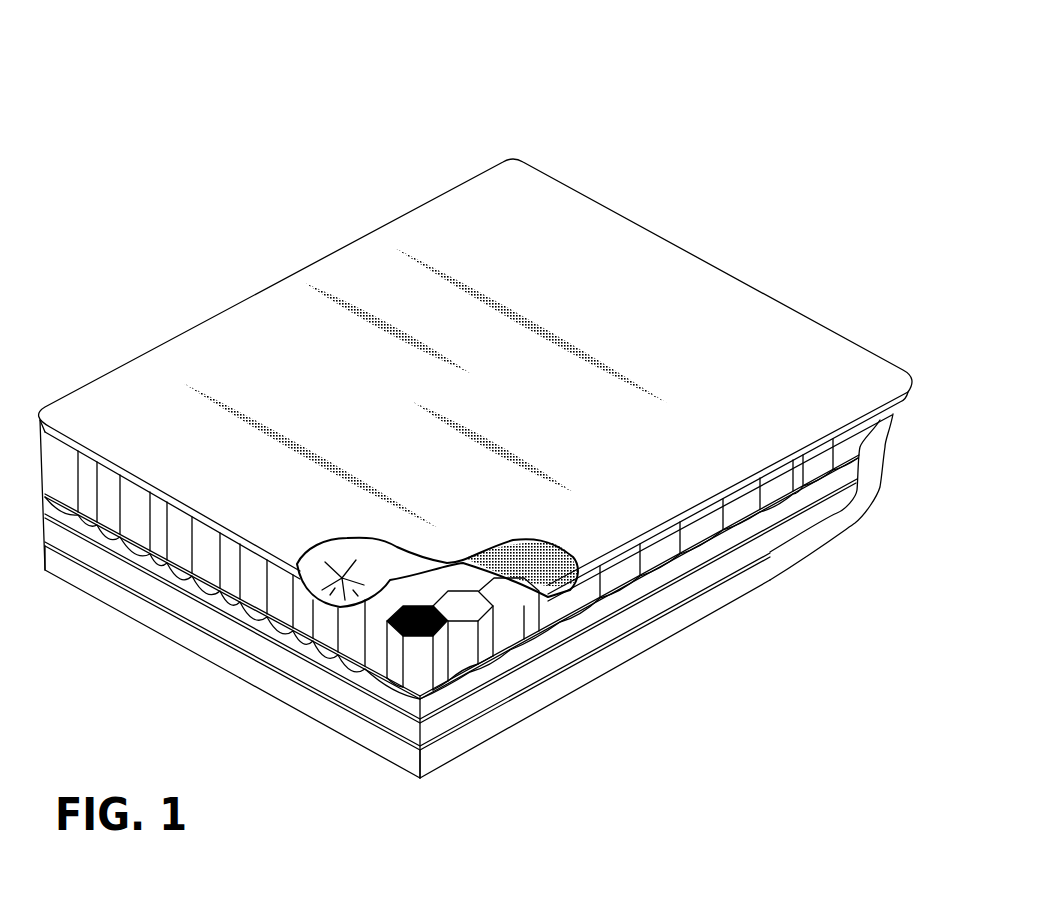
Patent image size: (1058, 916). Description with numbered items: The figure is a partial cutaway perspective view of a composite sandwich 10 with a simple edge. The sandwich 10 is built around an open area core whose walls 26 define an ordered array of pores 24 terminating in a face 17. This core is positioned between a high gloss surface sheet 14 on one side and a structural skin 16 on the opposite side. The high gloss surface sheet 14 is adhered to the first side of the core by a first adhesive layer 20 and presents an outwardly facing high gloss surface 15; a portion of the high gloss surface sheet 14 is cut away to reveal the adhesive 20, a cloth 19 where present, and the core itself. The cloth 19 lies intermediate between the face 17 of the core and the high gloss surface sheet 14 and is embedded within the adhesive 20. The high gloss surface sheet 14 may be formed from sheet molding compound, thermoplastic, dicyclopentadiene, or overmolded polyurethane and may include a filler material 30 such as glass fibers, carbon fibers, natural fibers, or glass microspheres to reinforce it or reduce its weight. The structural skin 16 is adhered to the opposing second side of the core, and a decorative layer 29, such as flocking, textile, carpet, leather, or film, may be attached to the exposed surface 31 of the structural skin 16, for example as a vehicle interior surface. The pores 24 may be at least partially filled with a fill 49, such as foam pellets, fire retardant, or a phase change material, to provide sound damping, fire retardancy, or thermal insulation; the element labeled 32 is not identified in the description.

The composite sandwich 10 is at (682, 82).
The high gloss surface sheet 14 is at (62, 420).
The high gloss surface 15 is at (326, 374).
The structural skin 16 is at (724, 565).
The face 17 is at (381, 608).
The cloth 19 is at (661, 588).
The first adhesive layer 20 is at (348, 570).
The pores 24 is at (455, 583).
The walls 26 is at (463, 628).
The decorative layer 29 is at (518, 720).
The filler material 30 is at (327, 560).
The exposed surface 31 is at (412, 742).
The adhesive layer 32 is at (542, 648).
The fill 49 is at (416, 606).